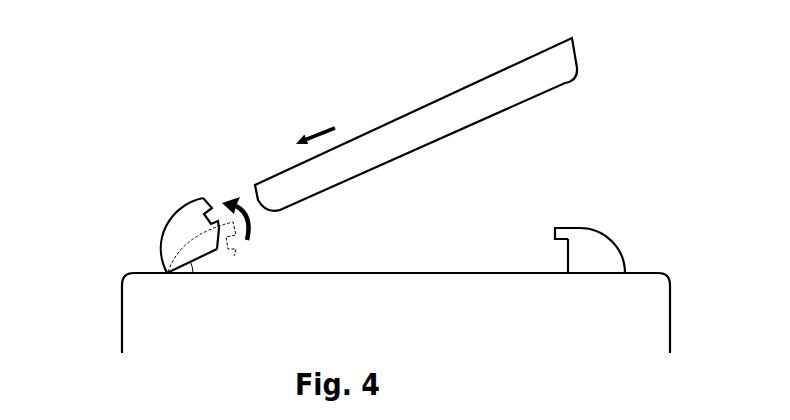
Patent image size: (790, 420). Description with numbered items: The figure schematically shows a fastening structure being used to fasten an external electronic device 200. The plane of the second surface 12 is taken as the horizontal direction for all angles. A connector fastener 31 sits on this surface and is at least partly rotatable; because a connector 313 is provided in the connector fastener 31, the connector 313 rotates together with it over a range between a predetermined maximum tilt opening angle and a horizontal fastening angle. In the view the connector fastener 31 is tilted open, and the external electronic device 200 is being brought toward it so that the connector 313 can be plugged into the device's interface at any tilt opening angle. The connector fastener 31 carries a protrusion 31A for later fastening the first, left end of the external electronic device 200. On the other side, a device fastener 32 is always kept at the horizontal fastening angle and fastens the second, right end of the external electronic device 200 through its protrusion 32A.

The second surface 12 is at (145, 297).
The connector fastener 31 is at (155, 205).
The protrusion 31A is at (192, 210).
The connector 313 is at (216, 218).
The device fastener 32 is at (550, 235).
The protrusion 32A is at (555, 237).
The external electronic device 200 is at (532, 80).